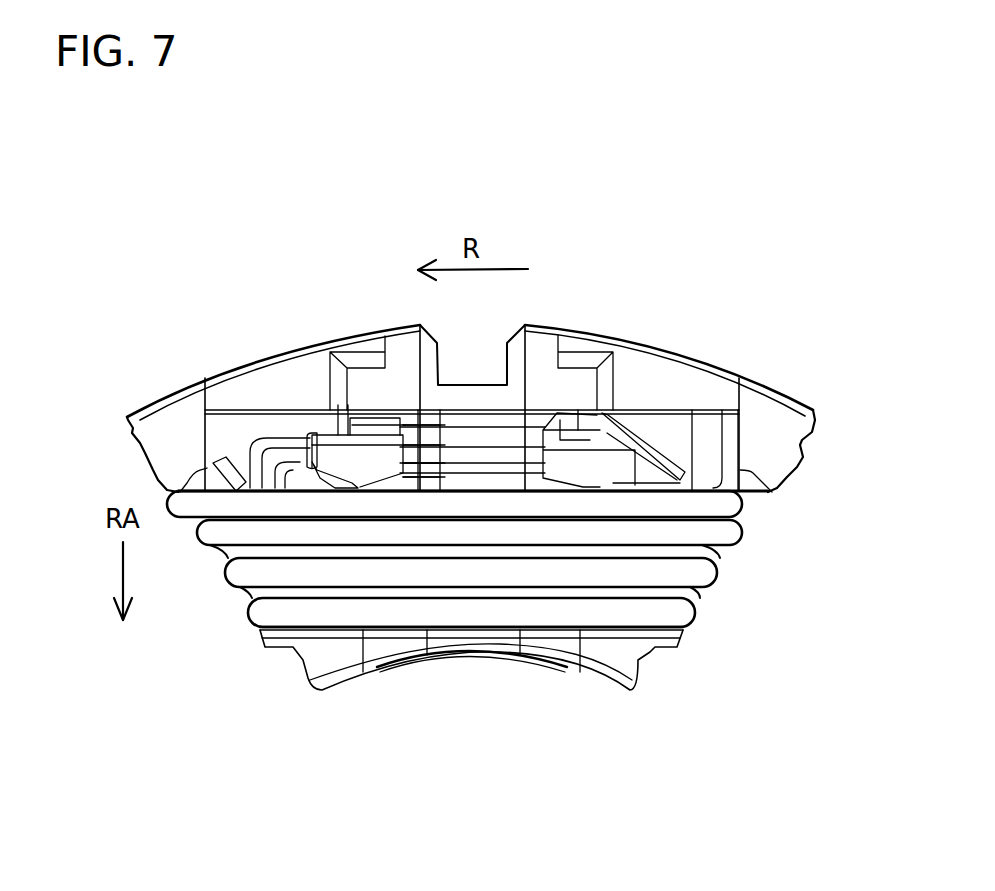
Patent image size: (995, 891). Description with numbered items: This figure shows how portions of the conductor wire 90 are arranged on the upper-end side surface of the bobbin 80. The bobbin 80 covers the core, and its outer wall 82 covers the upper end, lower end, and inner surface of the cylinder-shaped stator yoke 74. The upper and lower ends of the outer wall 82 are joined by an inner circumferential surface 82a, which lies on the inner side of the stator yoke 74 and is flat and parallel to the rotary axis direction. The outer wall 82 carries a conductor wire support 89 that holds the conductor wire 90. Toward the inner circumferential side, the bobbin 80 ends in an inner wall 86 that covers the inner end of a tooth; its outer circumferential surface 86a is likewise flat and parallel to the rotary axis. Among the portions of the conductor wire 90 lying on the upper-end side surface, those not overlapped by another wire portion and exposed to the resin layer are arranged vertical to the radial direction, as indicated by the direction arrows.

The bobbin 80 is at (610, 310).
The outer wall 82 is at (673, 383).
The inner circumferential surface 82a is at (240, 490).
The stator yoke 74 is at (772, 408).
The conductor wire support 89 is at (377, 457).
The conductor wire 90 is at (747, 532).
The inner wall 86 is at (610, 660).
The outer circumferential surface 86a is at (417, 623).